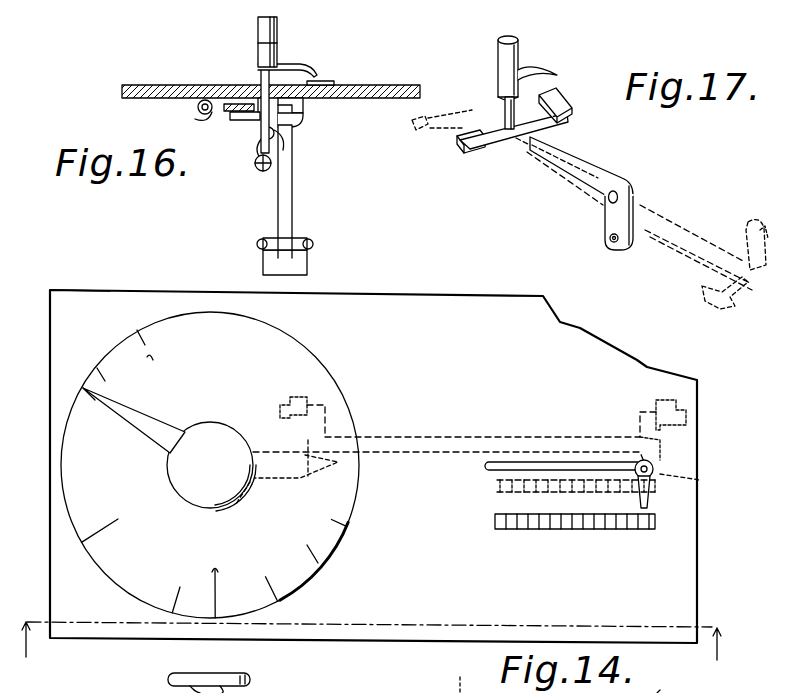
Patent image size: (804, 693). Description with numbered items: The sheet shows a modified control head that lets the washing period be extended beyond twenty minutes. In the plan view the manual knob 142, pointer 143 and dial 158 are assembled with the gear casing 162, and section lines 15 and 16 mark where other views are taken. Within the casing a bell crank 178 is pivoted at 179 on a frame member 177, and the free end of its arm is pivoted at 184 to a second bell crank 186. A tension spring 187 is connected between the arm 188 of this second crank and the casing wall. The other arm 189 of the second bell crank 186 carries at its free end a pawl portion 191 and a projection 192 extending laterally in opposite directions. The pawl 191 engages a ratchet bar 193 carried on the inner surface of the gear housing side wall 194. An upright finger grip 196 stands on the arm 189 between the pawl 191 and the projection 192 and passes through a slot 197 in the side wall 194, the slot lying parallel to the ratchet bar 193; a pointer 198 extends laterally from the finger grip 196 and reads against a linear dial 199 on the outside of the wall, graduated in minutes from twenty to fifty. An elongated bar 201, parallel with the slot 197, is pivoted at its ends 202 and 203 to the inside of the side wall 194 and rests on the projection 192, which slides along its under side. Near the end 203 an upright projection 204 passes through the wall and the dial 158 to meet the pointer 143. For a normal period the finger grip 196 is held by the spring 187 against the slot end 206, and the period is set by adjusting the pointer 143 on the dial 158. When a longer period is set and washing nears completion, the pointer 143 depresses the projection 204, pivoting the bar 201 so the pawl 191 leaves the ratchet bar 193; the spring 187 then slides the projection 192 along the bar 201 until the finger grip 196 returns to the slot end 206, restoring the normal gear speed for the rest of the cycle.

In FIG. 14, the section line 15 is at (376, 629).
In FIG. 14, the section line 16 is at (452, 681).
In FIG. 14, the manual knob 142 is at (234, 452).
In FIG. 14, the pointer 143 is at (145, 420).
In FIG. 14, the dial 158 is at (347, 550).
In FIG. 14, the gear casing 162 is at (152, 291).
In FIG. 16, the frame member 177 is at (302, 258).
In FIG. 16, the bell crank 178 is at (299, 207).
In FIG. 16, the pivot 179 is at (300, 242).
In FIG. 16, the pivot 184 is at (275, 136).
In FIG. 17, the second bell crank 186 is at (632, 181).
In FIG. 16, the tension spring 187 is at (258, 169).
In FIG. 17, the arm 188 is at (634, 210).
In FIG. 16, the arm 189 is at (284, 140).
In FIG. 17, the arm 189 is at (592, 170).
In FIG. 16, the pawl portion 191 is at (300, 121).
In FIG. 17, the pawl portion 191 is at (560, 100).
In FIG. 16, the projection 192 is at (243, 121).
In FIG. 17, the projection 192 is at (478, 149).
In FIG. 14, the projection 192 is at (686, 434).
In FIG. 16, the ratchet bar 193 is at (305, 105).
In FIG. 14, the ratchet bar 193 is at (498, 485).
In FIG. 16, the gear housing side wall 194 is at (170, 85).
In FIG. 16, the finger grip 196 is at (263, 33).
In FIG. 17, the finger grip 196 is at (519, 62).
In FIG. 14, the finger grip 196 is at (652, 462).
In FIG. 16, the slot 197 is at (258, 88).
In FIG. 14, the slot 197 is at (582, 466).
In FIG. 16, the pointer 198 is at (302, 65).
In FIG. 17, the pointer 198 is at (557, 75).
In FIG. 14, the pointer 198 is at (650, 498).
In FIG. 16, the linear dial 199 is at (334, 82).
In FIG. 14, the linear dial 199 is at (628, 530).
In FIG. 16, the elongated bar 201 is at (228, 112).
In FIG. 17, the elongated bar 201 is at (658, 236).
In FIG. 14, the elongated bar 201 is at (446, 444).
In FIG. 16, the end 202 is at (198, 105).
In FIG. 17, the end 202 is at (420, 126).
In FIG. 14, the end 202 is at (686, 408).
In FIG. 17, the end 203 is at (706, 298).
In FIG. 14, the end 203 is at (290, 400).
In FIG. 17, the upright projection 204 is at (752, 224).
In FIG. 14, the upright projection 204 is at (305, 478).
In FIG. 14, the slot end 206 is at (700, 480).